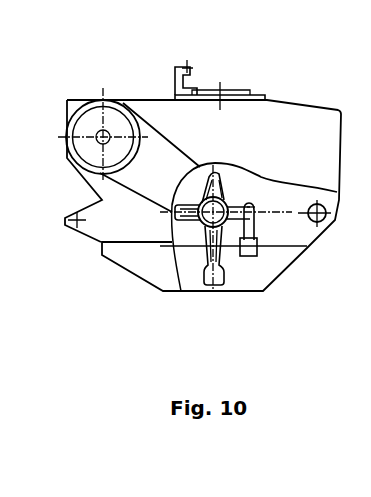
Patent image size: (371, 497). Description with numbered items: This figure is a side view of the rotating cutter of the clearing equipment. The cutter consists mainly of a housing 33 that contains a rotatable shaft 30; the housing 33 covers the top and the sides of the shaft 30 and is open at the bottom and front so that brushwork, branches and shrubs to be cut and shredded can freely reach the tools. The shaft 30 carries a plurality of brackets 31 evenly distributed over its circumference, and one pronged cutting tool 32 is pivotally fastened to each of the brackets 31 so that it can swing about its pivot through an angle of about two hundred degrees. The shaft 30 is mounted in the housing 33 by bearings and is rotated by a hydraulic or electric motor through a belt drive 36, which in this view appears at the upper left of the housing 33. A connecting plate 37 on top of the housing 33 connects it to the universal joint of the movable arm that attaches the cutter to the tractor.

The rotatable shaft 30 is at (202, 222).
The brackets 31 is at (209, 227).
The pronged cutting tool 32 is at (220, 285).
The housing 33 is at (307, 130).
The belt drive 36 is at (87, 125).
The connecting plate 37 is at (237, 90).